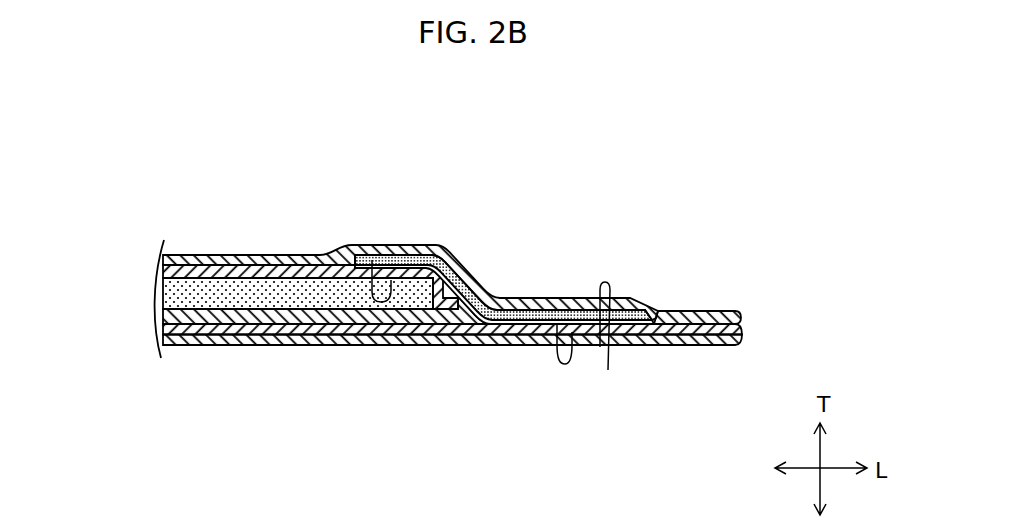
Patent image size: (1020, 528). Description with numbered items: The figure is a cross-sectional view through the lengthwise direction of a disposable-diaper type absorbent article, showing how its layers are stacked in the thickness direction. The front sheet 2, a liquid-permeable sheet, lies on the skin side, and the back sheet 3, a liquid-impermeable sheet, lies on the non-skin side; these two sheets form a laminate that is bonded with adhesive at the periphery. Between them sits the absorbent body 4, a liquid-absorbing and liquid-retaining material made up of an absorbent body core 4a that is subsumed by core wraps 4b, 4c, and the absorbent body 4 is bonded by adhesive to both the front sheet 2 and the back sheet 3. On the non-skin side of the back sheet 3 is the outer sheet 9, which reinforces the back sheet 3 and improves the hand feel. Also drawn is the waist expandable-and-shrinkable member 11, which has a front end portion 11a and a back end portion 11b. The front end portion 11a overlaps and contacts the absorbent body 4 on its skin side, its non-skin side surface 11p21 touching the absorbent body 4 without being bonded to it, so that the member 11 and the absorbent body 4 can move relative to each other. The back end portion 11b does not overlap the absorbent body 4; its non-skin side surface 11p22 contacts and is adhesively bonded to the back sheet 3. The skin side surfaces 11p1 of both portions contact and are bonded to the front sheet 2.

The front sheet 2 is at (723, 312).
The back sheet 3 is at (687, 327).
The absorbent body 4 is at (410, 198).
The absorbent body core 4a is at (240, 293).
The core wrap 4b is at (181, 264).
The core wrap 4c is at (281, 273).
The outer sheet 9 is at (227, 337).
The waist expandable-and-shrinkable member 11 is at (504, 206).
The front end portion 11a is at (406, 246).
The back end portion 11b is at (514, 304).
The skin side surface 11p1 is at (608, 370).
The non-skin side surface of the front end portion 11p21 is at (372, 260).
The non-skin side surface of the back end portion 11p22 is at (557, 325).